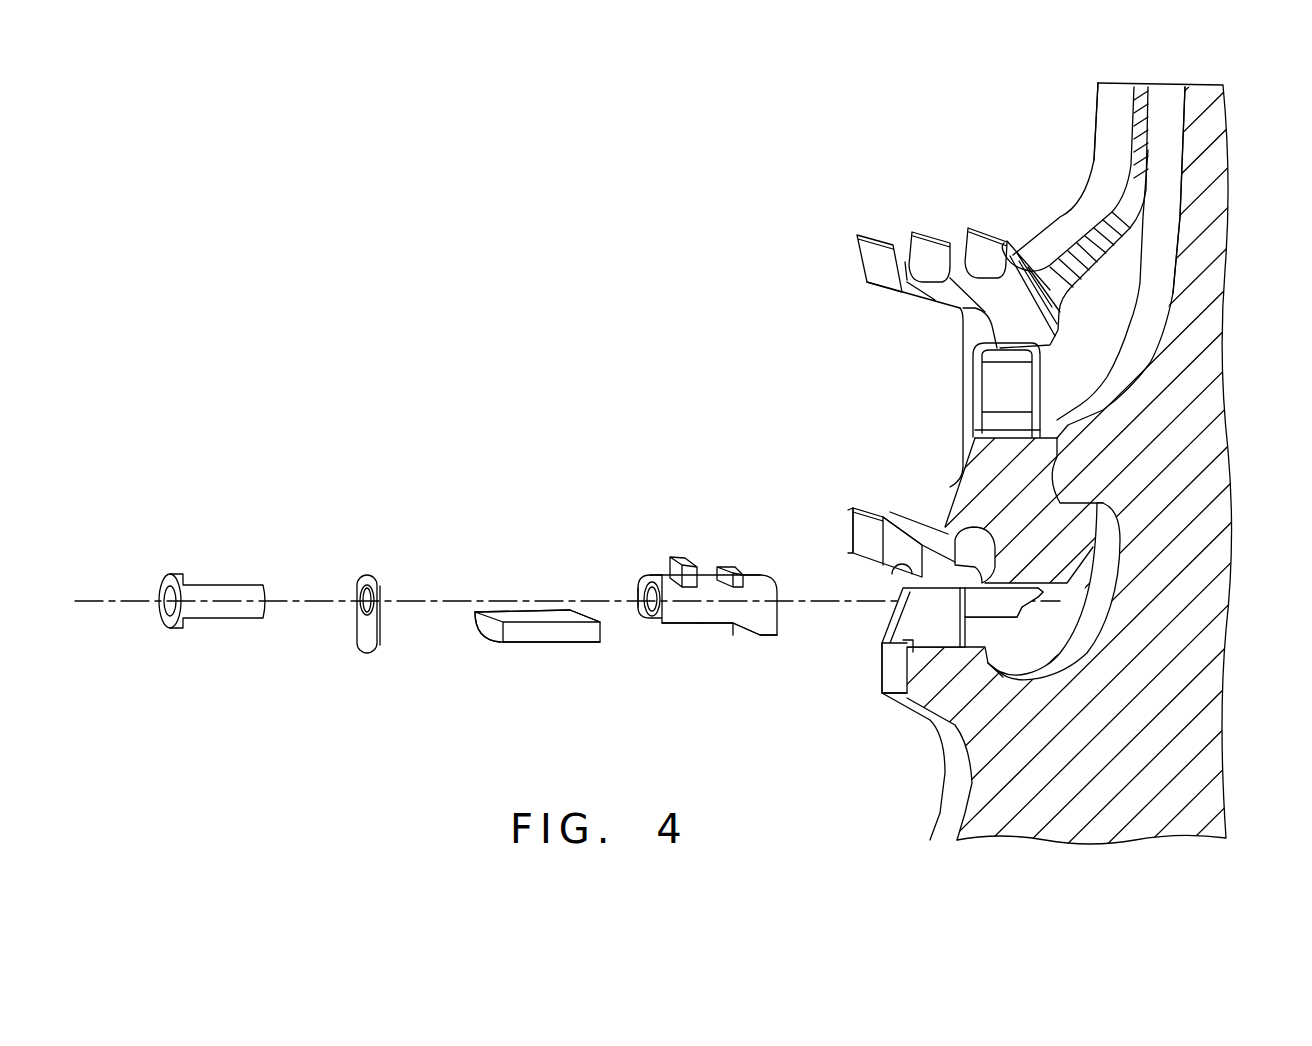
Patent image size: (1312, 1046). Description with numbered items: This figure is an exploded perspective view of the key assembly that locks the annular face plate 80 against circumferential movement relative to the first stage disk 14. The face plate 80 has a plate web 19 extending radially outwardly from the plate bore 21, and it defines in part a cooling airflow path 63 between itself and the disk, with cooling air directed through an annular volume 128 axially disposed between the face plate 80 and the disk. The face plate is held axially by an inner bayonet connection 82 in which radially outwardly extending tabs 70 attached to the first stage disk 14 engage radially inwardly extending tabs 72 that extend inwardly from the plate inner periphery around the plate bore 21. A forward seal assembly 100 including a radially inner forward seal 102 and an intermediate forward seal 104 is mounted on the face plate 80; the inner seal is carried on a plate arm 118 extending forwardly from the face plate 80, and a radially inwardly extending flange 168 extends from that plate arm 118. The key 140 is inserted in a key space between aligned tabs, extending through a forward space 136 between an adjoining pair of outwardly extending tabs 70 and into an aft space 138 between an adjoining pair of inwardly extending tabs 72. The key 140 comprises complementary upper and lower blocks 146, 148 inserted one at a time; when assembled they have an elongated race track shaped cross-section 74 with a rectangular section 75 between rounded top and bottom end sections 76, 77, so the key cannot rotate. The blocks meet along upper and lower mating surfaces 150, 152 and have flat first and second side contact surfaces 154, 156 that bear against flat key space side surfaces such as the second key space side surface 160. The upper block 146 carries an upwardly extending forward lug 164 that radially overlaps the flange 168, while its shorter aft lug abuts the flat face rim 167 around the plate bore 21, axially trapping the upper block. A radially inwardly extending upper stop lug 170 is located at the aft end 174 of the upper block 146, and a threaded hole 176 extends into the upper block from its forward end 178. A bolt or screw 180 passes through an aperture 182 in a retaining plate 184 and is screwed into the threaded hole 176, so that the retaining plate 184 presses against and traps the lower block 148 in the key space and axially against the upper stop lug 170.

The first stage disk 14 is at (1228, 442).
The plate web 19 is at (1100, 93).
The plate bore 21 is at (1087, 553).
The cooling airflow path 63 is at (1123, 268).
The radially outwardly extending tabs 70 is at (925, 641).
The radially inwardly extending tabs 72 is at (997, 663).
The race track shaped cross-section 74 is at (642, 600).
The rectangular section 75 is at (690, 605).
The outer end section 76 is at (648, 583).
The inner end section 77 is at (490, 630).
The annular face plate 80 is at (1063, 210).
The inner bayonet connection 82 is at (944, 738).
The forward seal assembly 100 is at (872, 372).
The radially inner forward seal 102 is at (897, 372).
The intermediate forward seal 104 is at (870, 235).
The plate arm 118 is at (880, 529).
The annular volume 128 is at (1101, 320).
The forward space 136 is at (884, 672).
The aft space 138 is at (1007, 607).
The key 140 is at (640, 530).
The upper block 146 is at (696, 616).
The lower block 148 is at (522, 623).
The upper mating surface 150 is at (725, 625).
The lower mating surface 152 is at (518, 608).
The upper flat first side contact surface 154 is at (552, 648).
The lower flat second side contact surface 156 is at (530, 608).
The second key space side surface 160 is at (730, 567).
The forward lug 164 is at (680, 557).
The flat face rim 167 is at (907, 500).
The radially inwardly extending flange 168 is at (918, 578).
The upper stop lug 170 is at (765, 634).
The aft end 174 is at (753, 585).
The threaded hole 176 is at (645, 615).
The forward end 178 is at (652, 626).
The bolt or screw 180 is at (214, 588).
The aperture 182 is at (362, 602).
The retaining plate 184 is at (362, 632).